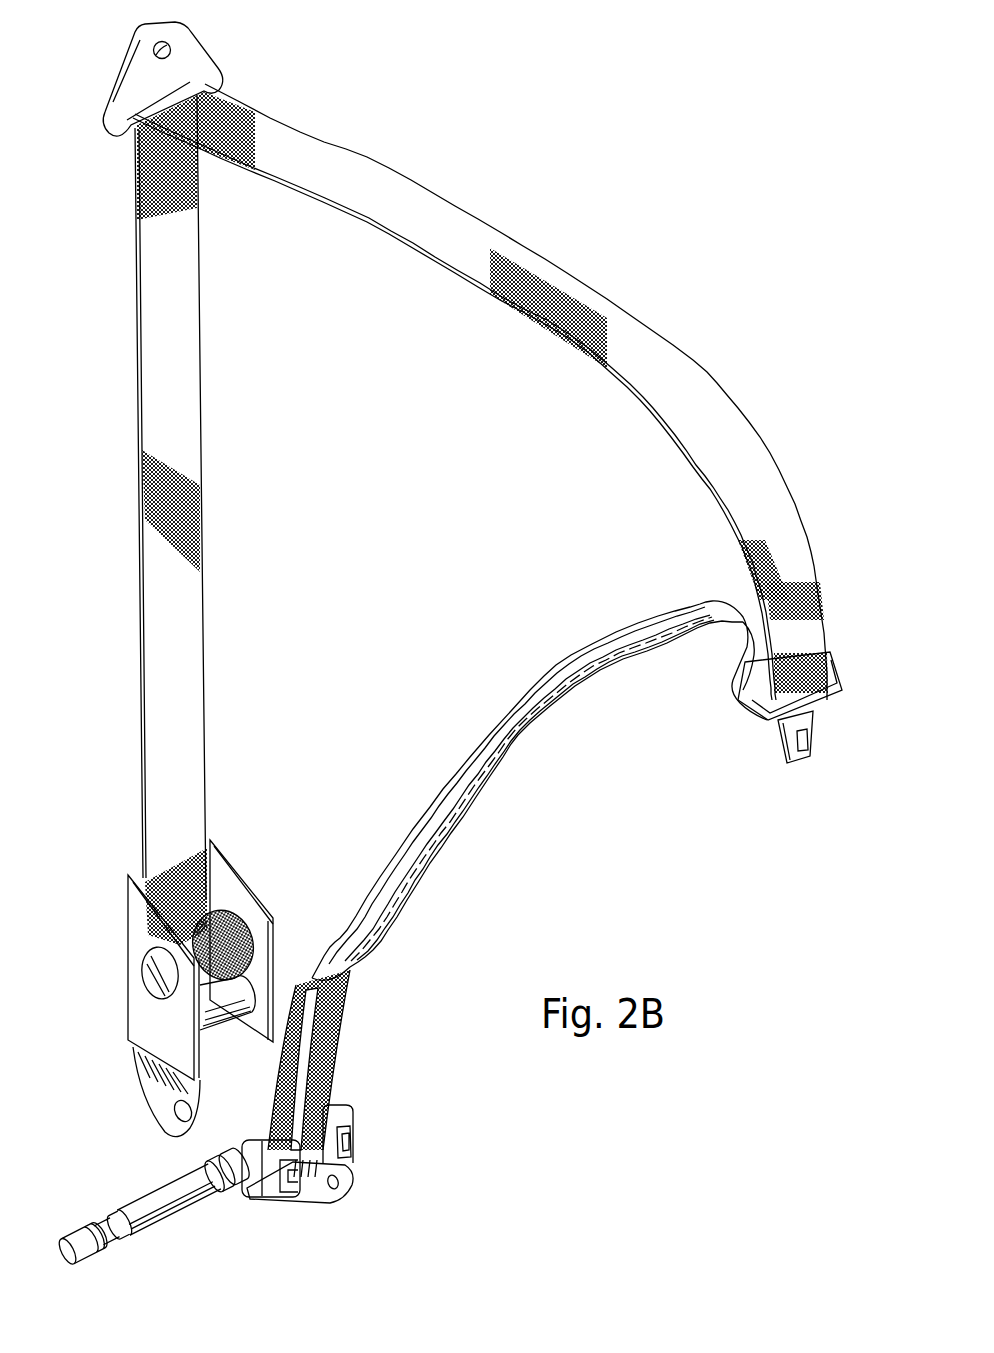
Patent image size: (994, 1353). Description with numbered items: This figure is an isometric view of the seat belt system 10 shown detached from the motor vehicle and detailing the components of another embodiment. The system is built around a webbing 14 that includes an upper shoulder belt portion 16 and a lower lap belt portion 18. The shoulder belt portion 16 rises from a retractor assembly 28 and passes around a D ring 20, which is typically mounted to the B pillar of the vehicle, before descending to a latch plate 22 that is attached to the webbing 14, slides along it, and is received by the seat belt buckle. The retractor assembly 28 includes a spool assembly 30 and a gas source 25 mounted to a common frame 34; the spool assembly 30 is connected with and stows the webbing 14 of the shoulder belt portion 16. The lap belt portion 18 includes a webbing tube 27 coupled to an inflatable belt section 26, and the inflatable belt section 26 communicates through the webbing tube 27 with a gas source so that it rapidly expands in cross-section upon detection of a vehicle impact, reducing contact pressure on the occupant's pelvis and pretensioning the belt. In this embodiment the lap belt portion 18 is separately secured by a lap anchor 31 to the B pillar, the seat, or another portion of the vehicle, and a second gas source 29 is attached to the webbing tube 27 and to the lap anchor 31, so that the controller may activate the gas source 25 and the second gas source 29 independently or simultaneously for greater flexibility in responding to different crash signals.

The seat belt system 10 is at (548, 128).
The webbing 14 is at (825, 632).
The shoulder belt portion 16 is at (792, 494).
The lap belt portion 18 is at (291, 1000).
The D ring 20 is at (112, 92).
The latch plate 22 is at (843, 672).
The gas source 25 is at (147, 1008).
The inflatable belt section 26 is at (462, 802).
The webbing tube 27 is at (338, 1014).
The retractor assembly 28 is at (233, 852).
The second gas source 29 is at (170, 1217).
The spool assembly 30 is at (143, 957).
The lap anchor 31 is at (349, 1190).
The frame 34 is at (150, 1032).